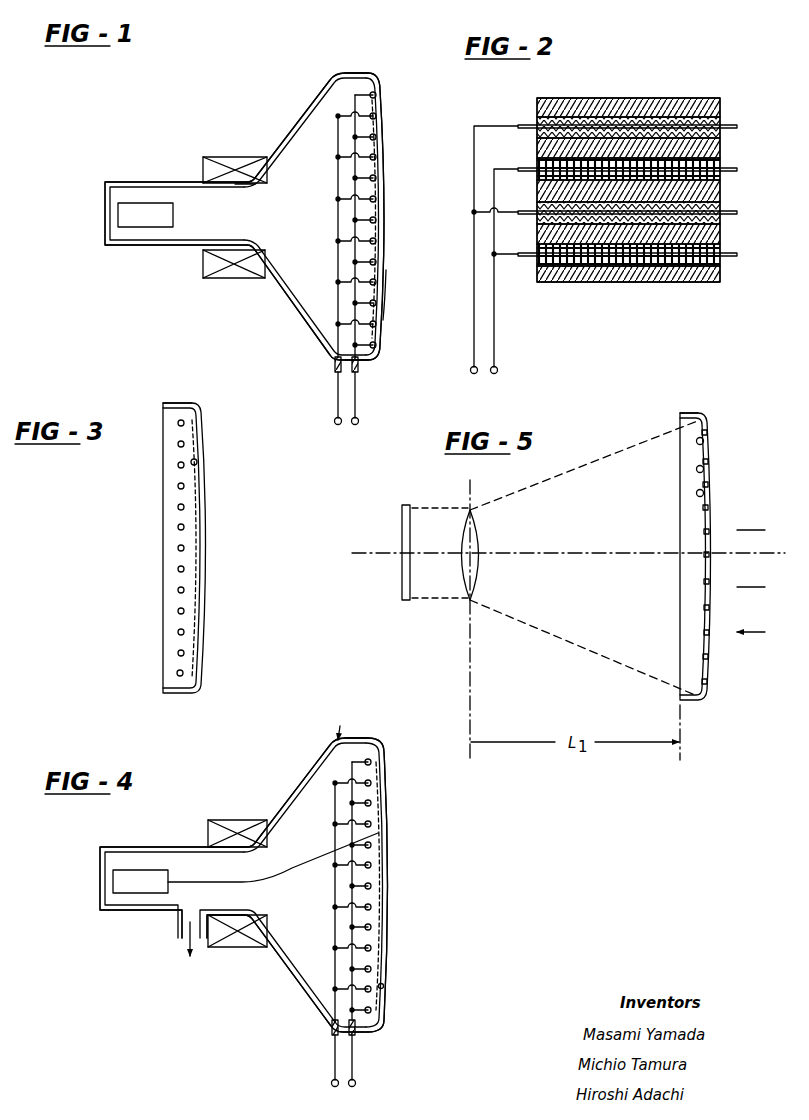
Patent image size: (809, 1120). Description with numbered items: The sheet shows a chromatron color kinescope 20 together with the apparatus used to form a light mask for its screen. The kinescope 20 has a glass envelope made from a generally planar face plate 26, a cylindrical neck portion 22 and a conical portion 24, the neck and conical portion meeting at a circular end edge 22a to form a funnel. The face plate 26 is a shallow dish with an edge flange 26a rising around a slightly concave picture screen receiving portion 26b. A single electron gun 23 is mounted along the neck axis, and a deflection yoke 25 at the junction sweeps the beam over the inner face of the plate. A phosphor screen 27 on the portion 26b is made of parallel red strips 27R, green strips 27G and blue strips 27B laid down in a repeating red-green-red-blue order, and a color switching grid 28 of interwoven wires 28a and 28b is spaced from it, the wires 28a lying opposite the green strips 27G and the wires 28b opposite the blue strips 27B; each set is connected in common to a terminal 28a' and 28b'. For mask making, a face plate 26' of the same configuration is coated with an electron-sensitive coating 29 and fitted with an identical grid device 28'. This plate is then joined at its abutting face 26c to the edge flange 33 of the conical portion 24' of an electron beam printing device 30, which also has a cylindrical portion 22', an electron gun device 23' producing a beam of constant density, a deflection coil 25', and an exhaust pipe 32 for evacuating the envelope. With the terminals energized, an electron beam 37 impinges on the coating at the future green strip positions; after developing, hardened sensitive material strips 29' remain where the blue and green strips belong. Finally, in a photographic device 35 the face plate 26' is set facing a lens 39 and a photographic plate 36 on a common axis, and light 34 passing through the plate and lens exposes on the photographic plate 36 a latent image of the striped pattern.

In FIG. 1, the chromatron color kinescope 20 is at (315, 81).
In FIG. 1, the cylindrical neck portion 22 is at (176, 198).
In FIG. 1, the circular end edge 22a is at (238, 186).
In FIG. 1, the electron gun 23 is at (142, 239).
In FIG. 1, the conical portion 24 is at (306, 216).
In FIG. 1, the deflection yoke 25 is at (235, 200).
In FIG. 1, the face plate 26 is at (399, 216).
In FIG. 1, the edge flange 26a is at (357, 75).
In FIG. 1, the picture screen receiving portion 26b is at (386, 292).
In FIG. 3, the abutting face 26c is at (163, 403).
In FIG. 5, the abutting face 26c is at (682, 413).
In FIG. 4, the abutting face 26c is at (356, 740).
In FIG. 1, the phosphor screen 27 is at (382, 164).
In FIG. 2, the phosphor screen 27 is at (638, 94).
In FIG. 2, the red strips 27R is at (722, 108).
In FIG. 2, the green strips 27G is at (738, 126).
In FIG. 5, the green strips 27G is at (710, 471).
In FIG. 2, the blue strips 27B is at (738, 169).
In FIG. 5, the blue strips 27B is at (710, 441).
In FIG. 1, the color switching grid 28 is at (327, 281).
In FIG. 1, the grid wires 28a is at (393, 220).
In FIG. 2, the grid wires 28a is at (603, 255).
In FIG. 1, the grid wires 28b is at (385, 219).
In FIG. 2, the grid wires 28b is at (613, 277).
In FIG. 3, the grid device 28' is at (153, 548).
In FIG. 4, the grid device 28' is at (401, 924).
In FIG. 4, the terminal 28a' is at (390, 886).
In FIG. 4, the terminal 28b' is at (382, 885).
In FIG. 3, the face plate 26' is at (204, 548).
In FIG. 5, the face plate 26' is at (711, 558).
In FIG. 4, the face plate 26' is at (397, 885).
In FIG. 3, the coating 29 is at (214, 474).
In FIG. 4, the coating 29 is at (397, 1002).
In FIG. 5, the sensitive material strips 29' is at (675, 473).
In FIG. 4, the electron beam printing device 30 is at (264, 776).
In FIG. 4, the cylindrical portion 22' is at (173, 880).
In FIG. 4, the electron gun device 23' is at (139, 854).
In FIG. 4, the conical portion 24' is at (284, 885).
In FIG. 4, the deflection coil 25' is at (237, 866).
In FIG. 4, the exhaust pipe 32 is at (178, 934).
In FIG. 4, the edge flange 33 is at (339, 724).
In FIG. 5, the light 34 is at (749, 634).
In FIG. 5, the photographic device 35 is at (462, 486).
In FIG. 5, the photographic plate 36 is at (402, 509).
In FIG. 4, the electron beam 37 is at (278, 879).
In FIG. 5, the lens 39 is at (486, 534).